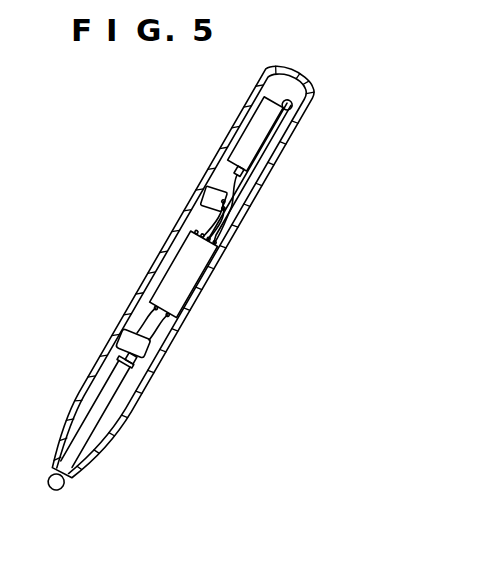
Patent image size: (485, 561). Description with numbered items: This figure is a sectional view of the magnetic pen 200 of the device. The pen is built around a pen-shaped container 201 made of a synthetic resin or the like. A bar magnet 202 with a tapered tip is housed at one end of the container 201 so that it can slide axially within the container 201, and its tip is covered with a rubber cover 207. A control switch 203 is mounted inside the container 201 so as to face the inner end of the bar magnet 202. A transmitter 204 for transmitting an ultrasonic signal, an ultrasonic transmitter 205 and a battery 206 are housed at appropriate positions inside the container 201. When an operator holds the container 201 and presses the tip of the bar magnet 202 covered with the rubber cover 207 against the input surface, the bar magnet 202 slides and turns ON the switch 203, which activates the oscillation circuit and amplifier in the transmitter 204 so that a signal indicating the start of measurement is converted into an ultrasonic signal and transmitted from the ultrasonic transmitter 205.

The magnetic pen 200 is at (254, 226).
The pen-shaped container 201 is at (311, 80).
The bar magnet 202 is at (80, 452).
The control switch 203 is at (150, 345).
The transmitter 204 is at (188, 285).
The ultrasonic transmitter 205 is at (213, 199).
The battery 206 is at (268, 133).
The rubber cover 207 is at (61, 490).